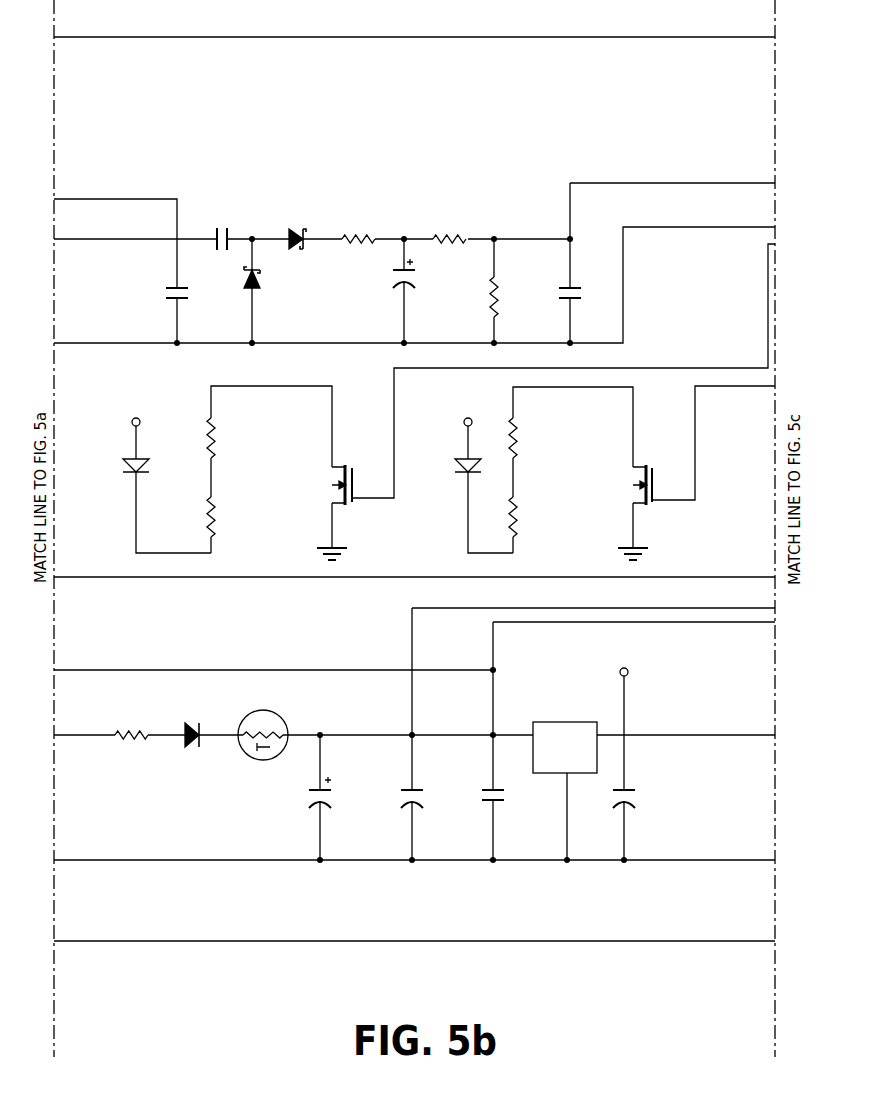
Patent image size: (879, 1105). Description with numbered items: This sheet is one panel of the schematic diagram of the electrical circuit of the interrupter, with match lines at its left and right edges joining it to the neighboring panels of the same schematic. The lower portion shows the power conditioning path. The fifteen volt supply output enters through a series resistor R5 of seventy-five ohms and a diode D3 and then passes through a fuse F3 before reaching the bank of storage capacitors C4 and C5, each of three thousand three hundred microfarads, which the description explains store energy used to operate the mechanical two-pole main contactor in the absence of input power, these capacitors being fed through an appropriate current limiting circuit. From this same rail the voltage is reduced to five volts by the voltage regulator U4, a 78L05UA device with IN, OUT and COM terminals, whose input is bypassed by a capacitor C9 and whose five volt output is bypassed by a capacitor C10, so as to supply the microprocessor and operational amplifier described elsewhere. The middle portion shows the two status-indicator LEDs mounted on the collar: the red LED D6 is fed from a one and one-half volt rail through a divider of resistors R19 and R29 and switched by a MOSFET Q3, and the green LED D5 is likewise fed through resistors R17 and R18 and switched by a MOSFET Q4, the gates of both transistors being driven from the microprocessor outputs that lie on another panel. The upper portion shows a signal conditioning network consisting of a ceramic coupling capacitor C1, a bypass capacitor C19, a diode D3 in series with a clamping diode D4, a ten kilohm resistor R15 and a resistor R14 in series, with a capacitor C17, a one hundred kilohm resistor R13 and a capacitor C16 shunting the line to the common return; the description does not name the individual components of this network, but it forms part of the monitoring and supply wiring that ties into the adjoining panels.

The 6.8uF ceramic capacitor C1 is at (218, 231).
The .1uF capacitor C19 is at (193, 299).
The diode SS14 / S1M D3 is at (244, 467).
The diode SS14 D4 is at (276, 291).
The 10K resistor R15 is at (358, 219).
The resistor Q R14 is at (449, 219).
The 6.8uF capacitor C17 is at (425, 291).
The 100k resistor R13 is at (515, 291).
The .1uF capacitor C16 is at (587, 297).
The red status-indicator LED D6 is at (144, 466).
The 220 ohm resistor R19 is at (269, 426).
The 220 ohm resistor R29 is at (226, 505).
The IRLML2803 MOSFET Q3 is at (290, 508).
The green status-indicator LED D5 is at (462, 466).
The 220 ohm resistor R17 is at (571, 427).
The 220 ohm resistor R18 is at (529, 505).
The IRLML2803 MOSFET Q4 is at (657, 473).
The 75 ohm resistor R5 is at (133, 715).
The fuse F3 is at (263, 726).
The storage capacitor C4 is at (344, 797).
The storage capacitor C5 is at (436, 809).
The .1uF capacitor C9 is at (510, 801).
The voltage regulator U4 is at (563, 727).
The 6.8uF capacitor C10 is at (650, 746).